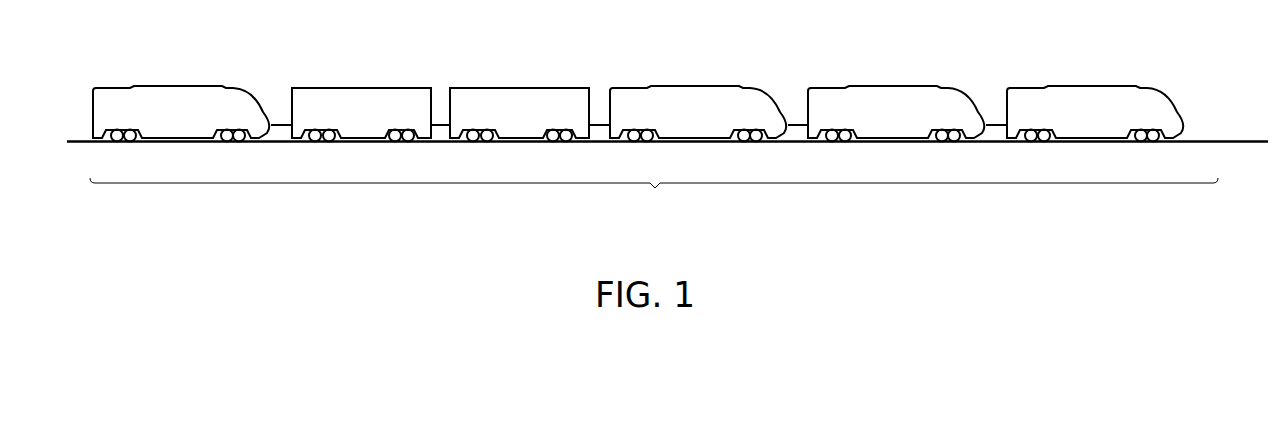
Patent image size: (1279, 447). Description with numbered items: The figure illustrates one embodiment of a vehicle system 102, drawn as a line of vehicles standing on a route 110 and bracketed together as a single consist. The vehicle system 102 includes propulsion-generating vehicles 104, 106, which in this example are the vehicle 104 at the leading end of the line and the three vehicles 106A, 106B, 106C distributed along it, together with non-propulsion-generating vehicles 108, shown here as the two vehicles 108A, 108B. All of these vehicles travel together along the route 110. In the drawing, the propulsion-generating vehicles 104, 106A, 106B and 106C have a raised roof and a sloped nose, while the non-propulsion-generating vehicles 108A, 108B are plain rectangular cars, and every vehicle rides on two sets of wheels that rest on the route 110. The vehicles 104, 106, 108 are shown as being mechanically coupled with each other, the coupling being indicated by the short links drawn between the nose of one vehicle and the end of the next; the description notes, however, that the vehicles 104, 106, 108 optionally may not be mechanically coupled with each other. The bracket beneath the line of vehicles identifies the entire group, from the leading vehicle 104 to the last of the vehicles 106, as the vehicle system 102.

The vehicle system 102 is at (654, 108).
The propulsion-generating vehicle 104 is at (1087, 86).
The propulsion-generating vehicles 106 is at (550, 71).
The propulsion-generating vehicle 106A is at (888, 86).
The propulsion-generating vehicle 106B is at (690, 86).
The propulsion-generating vehicle 106C is at (176, 86).
The non-propulsion-generating vehicles 108 is at (451, 72).
The non-propulsion-generating vehicle 108A is at (518, 88).
The non-propulsion-generating vehicle 108B is at (358, 88).
The route 110 is at (1228, 141).